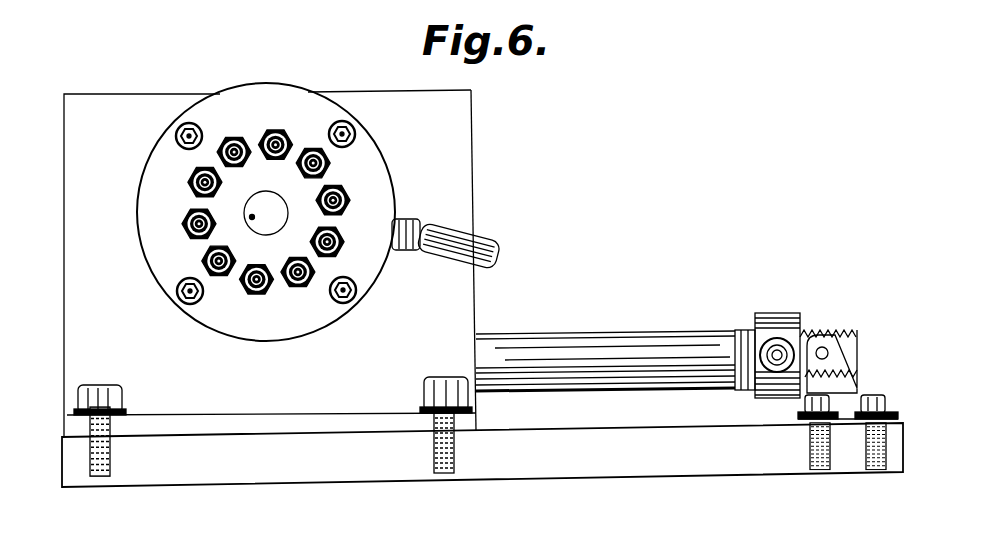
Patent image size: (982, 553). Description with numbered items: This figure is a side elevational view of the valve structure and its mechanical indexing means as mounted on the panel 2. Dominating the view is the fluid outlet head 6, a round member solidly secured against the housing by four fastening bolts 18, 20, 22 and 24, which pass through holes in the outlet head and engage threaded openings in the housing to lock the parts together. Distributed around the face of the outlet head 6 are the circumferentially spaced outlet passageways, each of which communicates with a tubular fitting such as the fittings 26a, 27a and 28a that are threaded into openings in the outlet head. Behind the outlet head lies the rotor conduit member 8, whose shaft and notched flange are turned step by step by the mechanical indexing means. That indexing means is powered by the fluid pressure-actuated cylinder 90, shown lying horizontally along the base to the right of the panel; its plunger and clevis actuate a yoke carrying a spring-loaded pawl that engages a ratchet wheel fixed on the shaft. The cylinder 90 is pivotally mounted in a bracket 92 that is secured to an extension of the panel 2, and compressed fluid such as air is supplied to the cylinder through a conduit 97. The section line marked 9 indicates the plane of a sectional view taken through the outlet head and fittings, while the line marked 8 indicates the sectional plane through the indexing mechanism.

The panel 2 is at (462, 143).
The fluid outlet head 6 is at (305, 108).
The bolt 18 is at (178, 134).
The bolt 20 is at (356, 132).
The bolt 22 is at (357, 292).
The bolt 24 is at (179, 300).
The tubular fitting 26a is at (290, 137).
The tubular fitting 27a is at (252, 217).
The tubular fitting 28a is at (263, 297).
The fluid pressure-actuated cylinder 90 is at (640, 322).
The bracket 92 is at (856, 390).
The conduit 97 is at (783, 347).
The rotor conduit member 8 is at (245, 218).
The section line 9- 9 is at (266, 262).